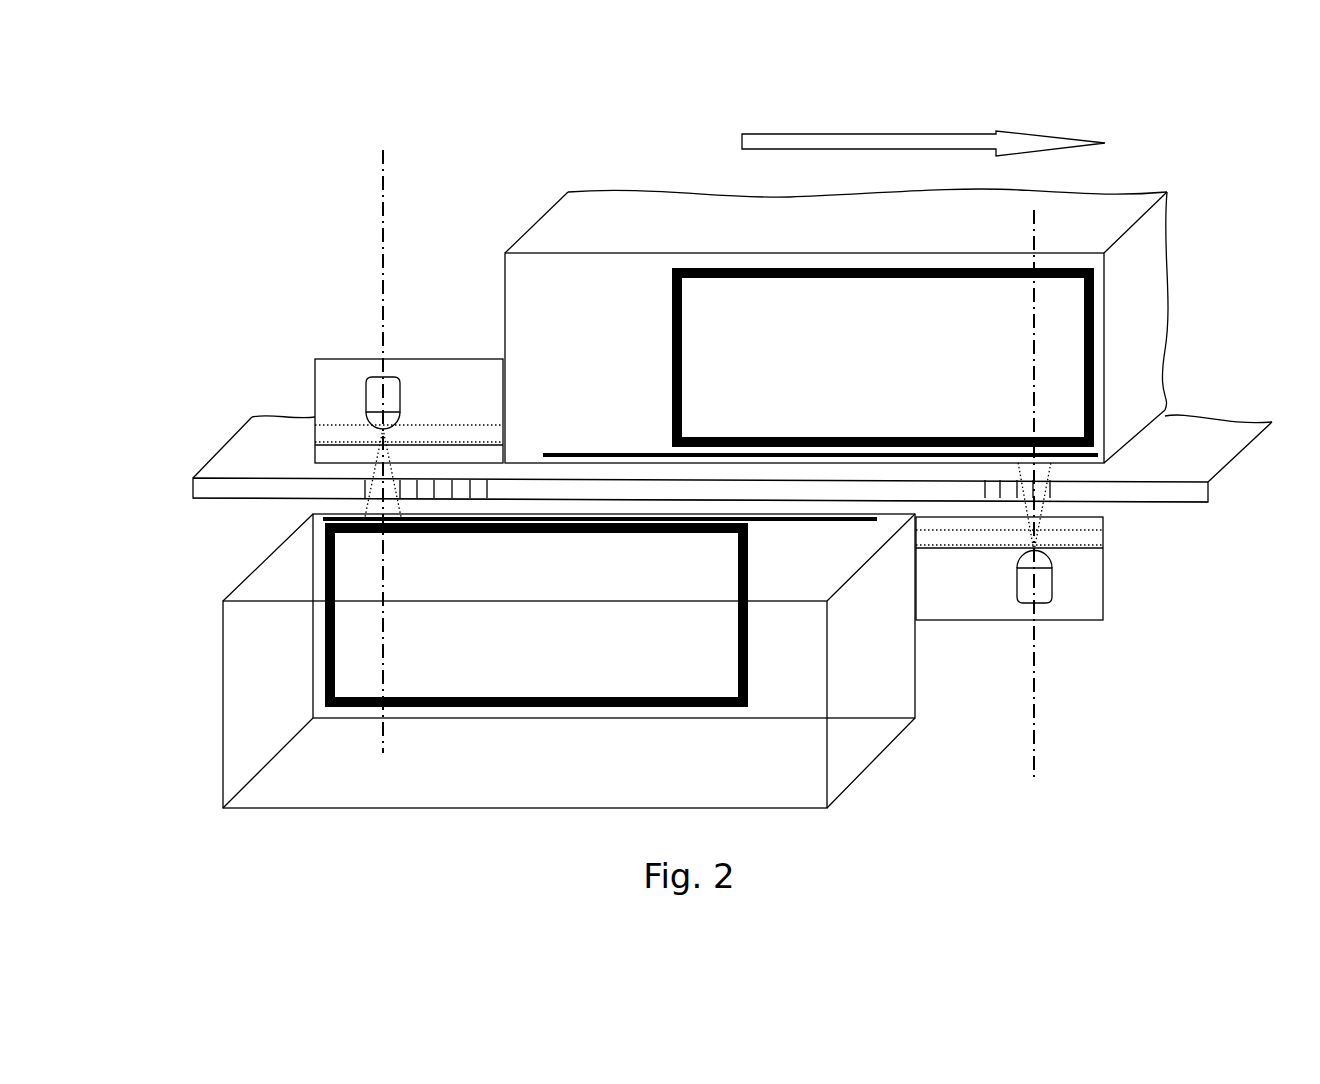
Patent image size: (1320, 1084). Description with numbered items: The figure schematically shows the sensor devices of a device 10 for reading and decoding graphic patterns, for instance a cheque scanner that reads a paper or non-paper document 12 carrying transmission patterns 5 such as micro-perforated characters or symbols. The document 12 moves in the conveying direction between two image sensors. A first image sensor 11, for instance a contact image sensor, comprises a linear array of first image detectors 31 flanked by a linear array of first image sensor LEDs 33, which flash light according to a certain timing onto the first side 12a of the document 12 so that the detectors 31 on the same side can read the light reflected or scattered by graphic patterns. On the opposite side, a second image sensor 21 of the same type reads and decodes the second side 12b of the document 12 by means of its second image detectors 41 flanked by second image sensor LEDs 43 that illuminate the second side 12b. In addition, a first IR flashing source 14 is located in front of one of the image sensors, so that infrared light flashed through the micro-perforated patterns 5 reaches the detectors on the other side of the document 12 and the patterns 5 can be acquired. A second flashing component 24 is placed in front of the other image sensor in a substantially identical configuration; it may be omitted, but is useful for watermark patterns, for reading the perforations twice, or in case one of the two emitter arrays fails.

The device for reading and decoding graphic patterns 10 is at (240, 204).
The transmission patterns 5 is at (425, 480).
The first image sensor 11 is at (1150, 258).
The document 12 is at (1183, 495).
The first side of the document 12a is at (1195, 432).
The second side of the document 12b is at (244, 511).
The first IR flashing source 14 is at (1085, 605).
The second image sensor 21 is at (848, 768).
The second flashing component 24 is at (338, 370).
The first image detectors 31 is at (672, 301).
The first image sensor LEDs 33 is at (597, 455).
The second image detectors 41 is at (328, 657).
The second image sensor LEDs 43 is at (843, 523).